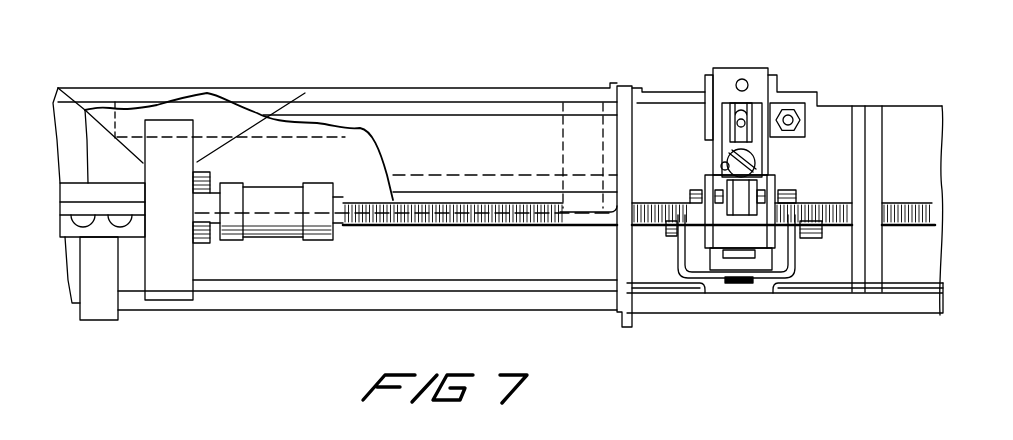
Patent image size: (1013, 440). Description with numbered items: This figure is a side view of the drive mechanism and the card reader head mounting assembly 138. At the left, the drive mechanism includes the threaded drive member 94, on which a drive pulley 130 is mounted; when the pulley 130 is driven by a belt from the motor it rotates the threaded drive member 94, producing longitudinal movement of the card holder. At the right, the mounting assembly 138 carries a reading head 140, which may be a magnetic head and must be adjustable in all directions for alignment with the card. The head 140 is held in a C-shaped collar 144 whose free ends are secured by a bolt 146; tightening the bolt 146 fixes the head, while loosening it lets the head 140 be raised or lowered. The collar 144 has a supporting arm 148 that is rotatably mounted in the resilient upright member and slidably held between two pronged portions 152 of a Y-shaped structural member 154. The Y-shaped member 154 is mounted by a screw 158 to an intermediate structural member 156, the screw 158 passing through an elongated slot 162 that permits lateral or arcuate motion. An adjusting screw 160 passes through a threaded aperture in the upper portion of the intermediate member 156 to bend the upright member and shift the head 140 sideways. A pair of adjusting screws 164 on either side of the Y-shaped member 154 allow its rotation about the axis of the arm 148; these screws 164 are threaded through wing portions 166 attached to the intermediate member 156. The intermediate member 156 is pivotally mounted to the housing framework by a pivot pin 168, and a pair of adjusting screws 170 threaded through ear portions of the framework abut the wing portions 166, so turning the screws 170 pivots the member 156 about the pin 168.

The threaded drive member 94 is at (423, 225).
The drive pulley 130 is at (278, 193).
The card reader head mounting assembly 138 is at (832, 149).
The reading head 140 is at (723, 72).
The C-shaped collar 144 is at (710, 113).
The bolt 146 is at (790, 120).
The supporting arm 148 is at (738, 125).
The pronged portions 152 is at (753, 103).
The Y-shaped structural member 154 is at (727, 145).
The intermediate structural member 156 is at (762, 82).
The screw 158 is at (747, 158).
The adjusting screw 160 is at (745, 80).
The elongated slot 162 is at (753, 162).
The adjusting screws 164 is at (777, 183).
The wing portions 166 is at (772, 246).
The pivot pin 168 is at (750, 282).
The adjusting screws 170 is at (668, 235).